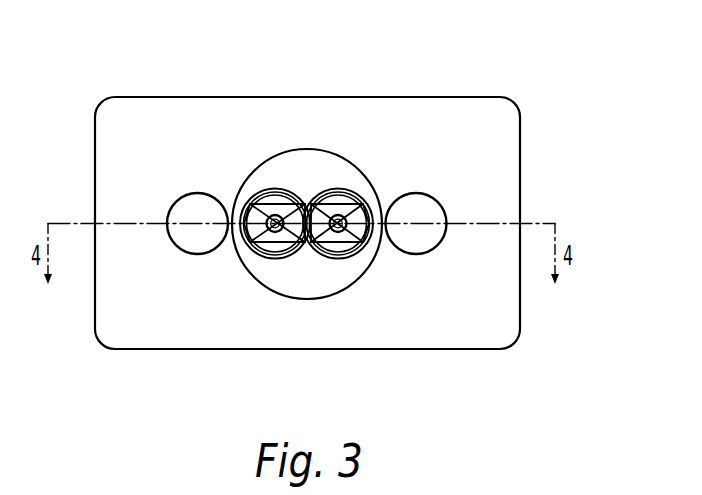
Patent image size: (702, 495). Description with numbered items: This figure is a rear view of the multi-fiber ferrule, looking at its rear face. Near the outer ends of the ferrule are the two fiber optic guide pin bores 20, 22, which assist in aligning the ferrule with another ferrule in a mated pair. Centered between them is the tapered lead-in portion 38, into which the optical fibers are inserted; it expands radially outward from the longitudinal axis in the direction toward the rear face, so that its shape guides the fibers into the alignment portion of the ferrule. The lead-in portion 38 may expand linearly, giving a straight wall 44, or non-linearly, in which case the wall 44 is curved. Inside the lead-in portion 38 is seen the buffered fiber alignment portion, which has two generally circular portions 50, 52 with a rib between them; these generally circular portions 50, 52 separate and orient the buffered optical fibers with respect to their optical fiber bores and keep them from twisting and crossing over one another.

The fiber optic guide pin bore 20 is at (190, 193).
The fiber optic guide pin bore 22 is at (415, 193).
The tapered lead-in portion 38 is at (302, 283).
The wall 44 is at (317, 162).
The generally circular portion 50 is at (263, 190).
The generally circular portion 52 is at (345, 190).